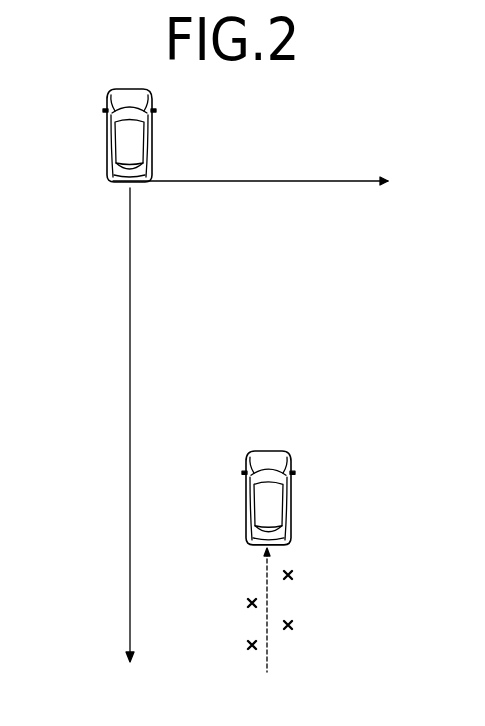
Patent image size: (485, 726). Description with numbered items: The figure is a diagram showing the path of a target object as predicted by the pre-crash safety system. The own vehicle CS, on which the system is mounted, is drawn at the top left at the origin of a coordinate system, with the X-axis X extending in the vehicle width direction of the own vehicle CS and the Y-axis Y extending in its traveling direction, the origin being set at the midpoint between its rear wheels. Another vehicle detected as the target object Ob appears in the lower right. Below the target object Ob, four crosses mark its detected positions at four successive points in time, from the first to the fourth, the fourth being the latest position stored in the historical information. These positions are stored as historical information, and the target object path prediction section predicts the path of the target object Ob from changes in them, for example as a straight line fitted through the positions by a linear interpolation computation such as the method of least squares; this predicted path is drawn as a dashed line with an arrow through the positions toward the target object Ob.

The own vehicle CS is at (107, 147).
The target object Ob is at (291, 489).
The X-axis X is at (260, 183).
The Y-axis Y is at (129, 440).